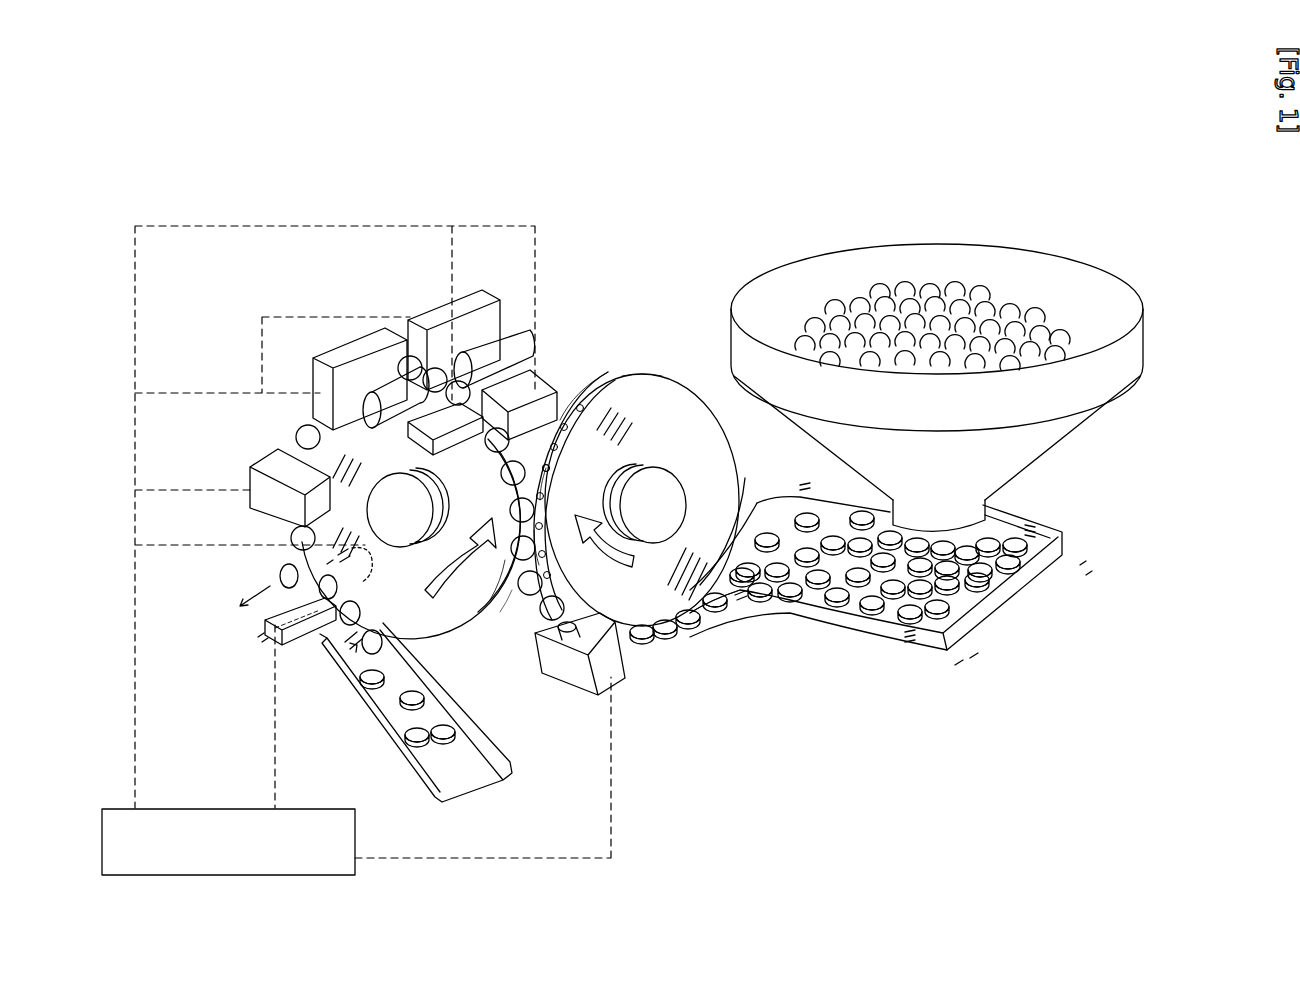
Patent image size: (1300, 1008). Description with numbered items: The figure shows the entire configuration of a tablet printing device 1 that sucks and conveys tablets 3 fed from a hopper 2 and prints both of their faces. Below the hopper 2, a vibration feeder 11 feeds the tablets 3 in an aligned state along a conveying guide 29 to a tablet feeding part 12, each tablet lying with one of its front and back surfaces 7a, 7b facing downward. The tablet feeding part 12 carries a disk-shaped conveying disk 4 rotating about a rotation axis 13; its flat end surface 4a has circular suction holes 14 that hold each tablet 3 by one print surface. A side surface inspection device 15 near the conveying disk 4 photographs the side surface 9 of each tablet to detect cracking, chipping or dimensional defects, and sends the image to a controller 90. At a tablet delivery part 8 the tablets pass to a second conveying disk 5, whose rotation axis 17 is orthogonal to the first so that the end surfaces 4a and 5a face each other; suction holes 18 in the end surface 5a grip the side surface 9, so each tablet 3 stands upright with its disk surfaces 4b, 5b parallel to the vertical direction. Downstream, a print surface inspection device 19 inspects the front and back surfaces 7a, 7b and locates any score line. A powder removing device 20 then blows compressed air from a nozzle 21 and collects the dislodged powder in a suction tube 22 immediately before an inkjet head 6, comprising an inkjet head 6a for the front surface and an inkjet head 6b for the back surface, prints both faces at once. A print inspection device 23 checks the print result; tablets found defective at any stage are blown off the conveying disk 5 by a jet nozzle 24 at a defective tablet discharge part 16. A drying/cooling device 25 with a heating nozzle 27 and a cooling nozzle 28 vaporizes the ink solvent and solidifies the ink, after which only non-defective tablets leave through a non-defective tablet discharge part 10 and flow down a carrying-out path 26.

The tablet printing device 1 is at (491, 244).
The hopper 2 is at (1150, 320).
The tablet 3 is at (450, 727).
The conveying disk 4 is at (668, 390).
The end surface 4a is at (627, 377).
The disk surface 4b is at (642, 433).
The conveying disk 5 is at (443, 613).
The end surface 5a is at (497, 603).
The disk surface 5b is at (372, 465).
The inkjet head 6 is at (376, 312).
The inkjet head for front surface 6a is at (450, 313).
The inkjet head for back surface 6b is at (340, 355).
The front surface 7a is at (562, 412).
The back surface 7b is at (492, 445).
The tablet delivery part 8 is at (541, 533).
The side surface 9 is at (548, 462).
The non-defective tablet discharge part 10 is at (333, 682).
The vibration feeder 11 is at (888, 645).
The tablet feeding part 12 is at (655, 648).
The rotation axis 13 is at (668, 493).
The suction holes 14 is at (613, 377).
The side surface inspection device 15 is at (580, 680).
The defective tablet discharge part 16 is at (345, 555).
The rotation axis 17 is at (406, 542).
The suction holes 18 is at (513, 600).
The print surface inspection device 19 is at (540, 377).
The powder removing device 20 is at (454, 313).
The nozzle 21 is at (515, 345).
The suction tube 22 is at (390, 393).
The print inspection device 23 is at (253, 472).
The jet nozzle 24 is at (360, 550).
The drying/cooling device 25 is at (268, 632).
The carrying-out path 26 is at (484, 792).
The heating nozzle 27 is at (253, 615).
The cooling nozzle 28 is at (300, 630).
The conveying guide 29 is at (733, 622).
The controller 90 is at (235, 808).